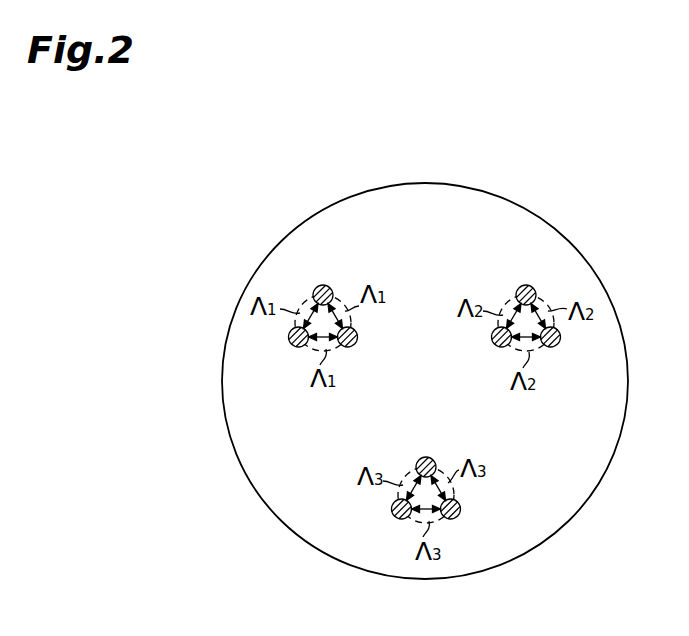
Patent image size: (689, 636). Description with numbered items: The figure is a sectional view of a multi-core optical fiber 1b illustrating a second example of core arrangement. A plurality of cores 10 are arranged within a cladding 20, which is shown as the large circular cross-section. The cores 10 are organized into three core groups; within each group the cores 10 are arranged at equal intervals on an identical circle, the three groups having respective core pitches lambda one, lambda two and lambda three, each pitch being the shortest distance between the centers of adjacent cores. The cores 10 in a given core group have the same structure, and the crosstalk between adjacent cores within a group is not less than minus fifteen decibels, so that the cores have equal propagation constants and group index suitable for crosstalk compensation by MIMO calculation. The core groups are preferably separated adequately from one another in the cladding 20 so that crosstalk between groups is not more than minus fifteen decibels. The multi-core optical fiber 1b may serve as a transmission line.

The multi-core optical fiber 1b is at (557, 185).
The cores 10 is at (332, 279).
The cladding 20 is at (556, 495).